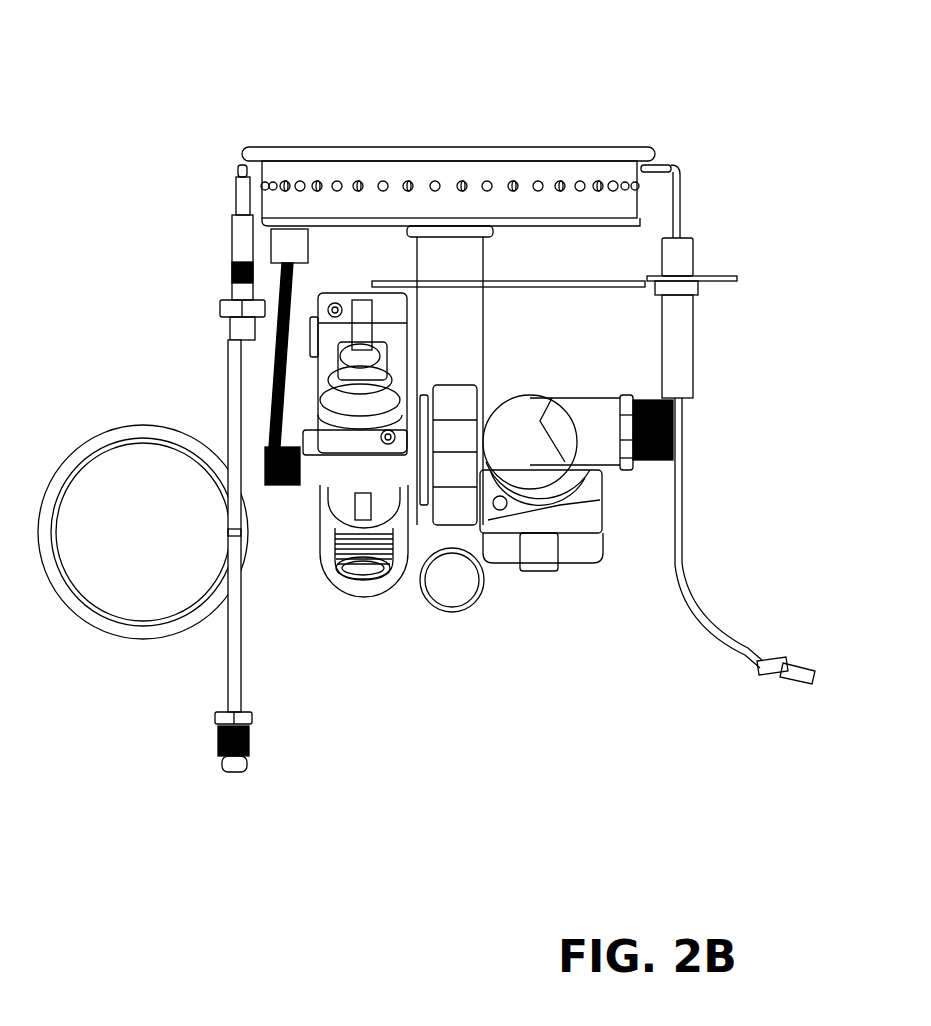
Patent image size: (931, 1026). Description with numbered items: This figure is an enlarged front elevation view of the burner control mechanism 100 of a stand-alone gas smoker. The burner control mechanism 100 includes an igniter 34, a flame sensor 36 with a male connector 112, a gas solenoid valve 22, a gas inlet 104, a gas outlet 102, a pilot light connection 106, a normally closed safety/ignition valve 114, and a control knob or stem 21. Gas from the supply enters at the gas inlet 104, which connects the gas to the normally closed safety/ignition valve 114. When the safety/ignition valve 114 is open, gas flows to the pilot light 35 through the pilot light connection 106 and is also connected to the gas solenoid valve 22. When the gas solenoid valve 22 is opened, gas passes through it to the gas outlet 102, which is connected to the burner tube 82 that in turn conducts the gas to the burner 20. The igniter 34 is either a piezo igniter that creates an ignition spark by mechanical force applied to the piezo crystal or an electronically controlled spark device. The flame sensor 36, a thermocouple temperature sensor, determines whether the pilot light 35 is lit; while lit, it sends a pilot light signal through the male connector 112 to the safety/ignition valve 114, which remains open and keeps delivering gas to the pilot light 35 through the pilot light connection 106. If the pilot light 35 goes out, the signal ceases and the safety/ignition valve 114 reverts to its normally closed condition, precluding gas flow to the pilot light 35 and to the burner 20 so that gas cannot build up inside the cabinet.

The burner 20 is at (457, 152).
The control knob (stem) 21 is at (360, 350).
The gas solenoid valve 22 is at (537, 580).
The igniter 34 is at (678, 257).
The pilot light 35 is at (290, 245).
The flame sensor (thermocouple temperature sensor) 36 is at (238, 245).
The burner tube 82 is at (455, 600).
The burner control mechanism 100 is at (393, 712).
The gas outlet 102 is at (652, 462).
The gas inlet 104 is at (367, 575).
The pilot light connection 106 is at (277, 490).
The male connector 112 is at (228, 767).
The normally closed safety/ignition valve 114 is at (340, 597).